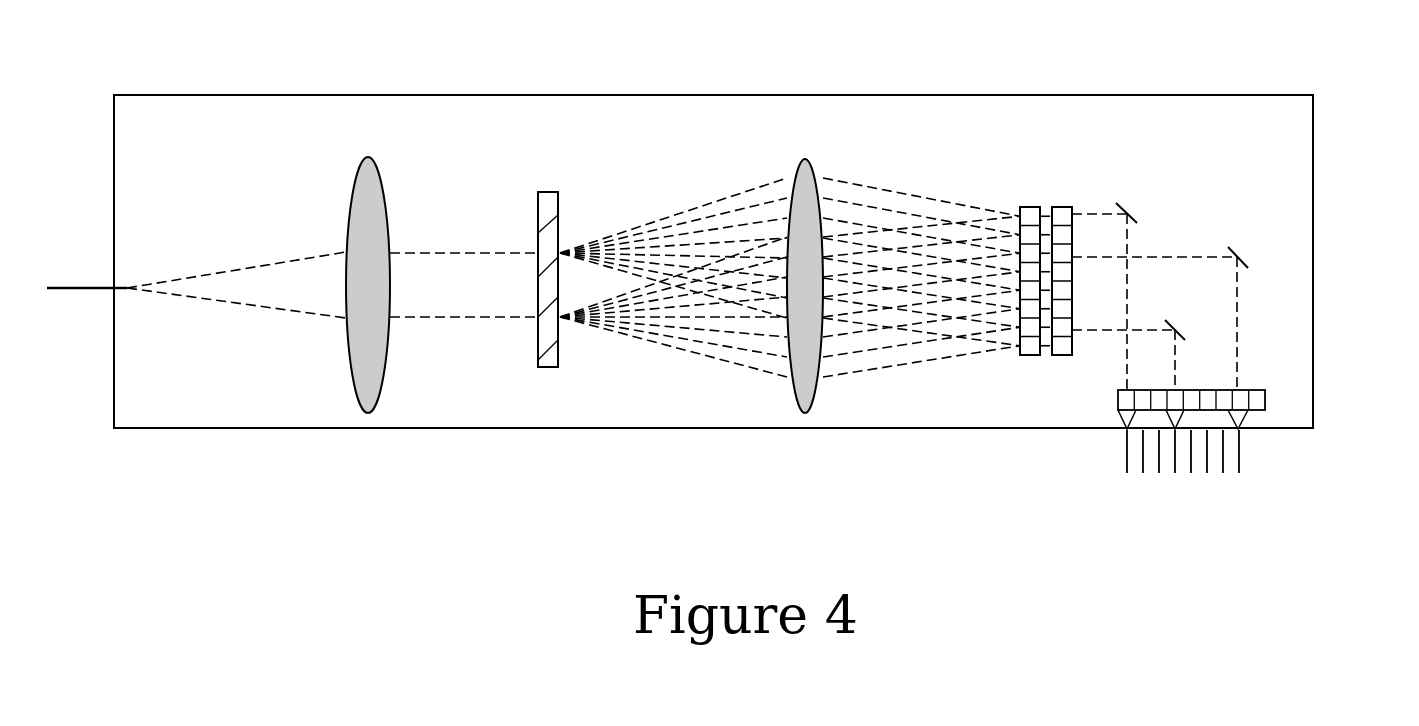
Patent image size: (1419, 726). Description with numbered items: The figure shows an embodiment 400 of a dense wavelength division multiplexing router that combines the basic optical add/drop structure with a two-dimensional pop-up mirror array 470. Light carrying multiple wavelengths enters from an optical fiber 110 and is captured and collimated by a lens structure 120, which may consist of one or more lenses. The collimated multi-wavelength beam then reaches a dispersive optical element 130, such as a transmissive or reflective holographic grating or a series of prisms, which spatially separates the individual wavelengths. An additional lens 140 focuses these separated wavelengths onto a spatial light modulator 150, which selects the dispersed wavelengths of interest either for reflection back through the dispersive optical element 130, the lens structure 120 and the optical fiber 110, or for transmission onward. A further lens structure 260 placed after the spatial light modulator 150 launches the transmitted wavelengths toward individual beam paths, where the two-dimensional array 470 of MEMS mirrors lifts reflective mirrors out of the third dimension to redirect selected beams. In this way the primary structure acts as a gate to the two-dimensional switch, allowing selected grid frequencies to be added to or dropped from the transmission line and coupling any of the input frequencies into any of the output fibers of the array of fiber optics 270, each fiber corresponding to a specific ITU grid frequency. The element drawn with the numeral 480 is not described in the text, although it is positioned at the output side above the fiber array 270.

The DWDM router embodiment 400 is at (713, 239).
The optical fiber 110 is at (87, 379).
The lens structure 120 is at (364, 313).
The dispersive optical element 130 is at (547, 331).
The lens 140 is at (793, 314).
The spatial light modulator 150 is at (1046, 338).
The lens structure 260 is at (1061, 182).
The 2-D pop-up mirror array 470 is at (1186, 208).
The detector array 480 is at (1300, 397).
The array of fiber optics 270 is at (1183, 472).